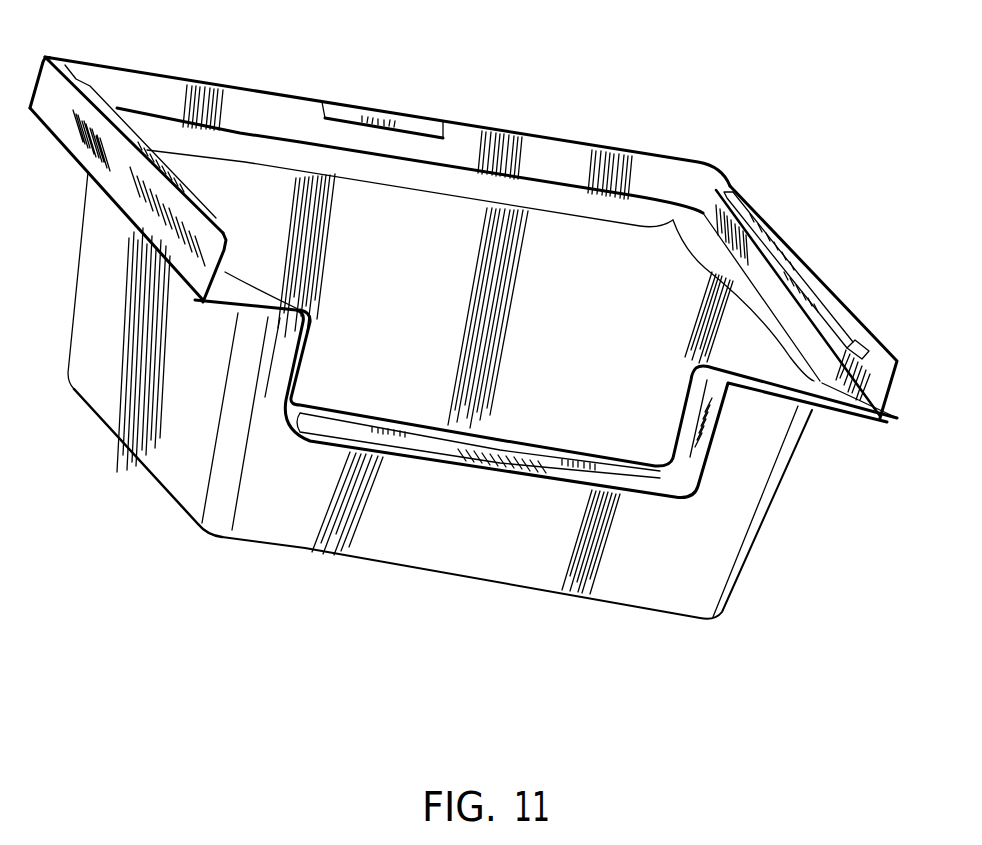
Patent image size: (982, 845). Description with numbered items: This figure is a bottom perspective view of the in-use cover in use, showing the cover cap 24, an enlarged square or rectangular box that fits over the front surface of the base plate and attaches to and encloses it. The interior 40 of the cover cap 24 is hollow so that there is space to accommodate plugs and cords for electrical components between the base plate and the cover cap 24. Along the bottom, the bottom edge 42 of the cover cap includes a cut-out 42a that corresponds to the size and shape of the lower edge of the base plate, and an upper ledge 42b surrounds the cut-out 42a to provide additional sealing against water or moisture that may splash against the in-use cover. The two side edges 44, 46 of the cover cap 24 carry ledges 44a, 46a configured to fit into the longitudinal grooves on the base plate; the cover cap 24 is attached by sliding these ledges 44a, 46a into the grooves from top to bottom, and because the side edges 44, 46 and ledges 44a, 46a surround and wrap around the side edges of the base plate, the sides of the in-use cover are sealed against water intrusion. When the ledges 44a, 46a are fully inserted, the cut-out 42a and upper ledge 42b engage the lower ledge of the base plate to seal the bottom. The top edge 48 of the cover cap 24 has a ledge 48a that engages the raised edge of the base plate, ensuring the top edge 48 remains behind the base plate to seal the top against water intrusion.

The cover cap 24 is at (642, 610).
The interior 40 is at (403, 306).
The bottom edge 42 is at (292, 505).
The cut-out 42a is at (470, 466).
The upper ledge 42b is at (680, 417).
The side edge 44 is at (67, 122).
The ledge 44a is at (108, 88).
The side edge 46 is at (893, 388).
The ledge 46a is at (825, 316).
The top edge 48 is at (508, 132).
The ledge 48a is at (408, 125).